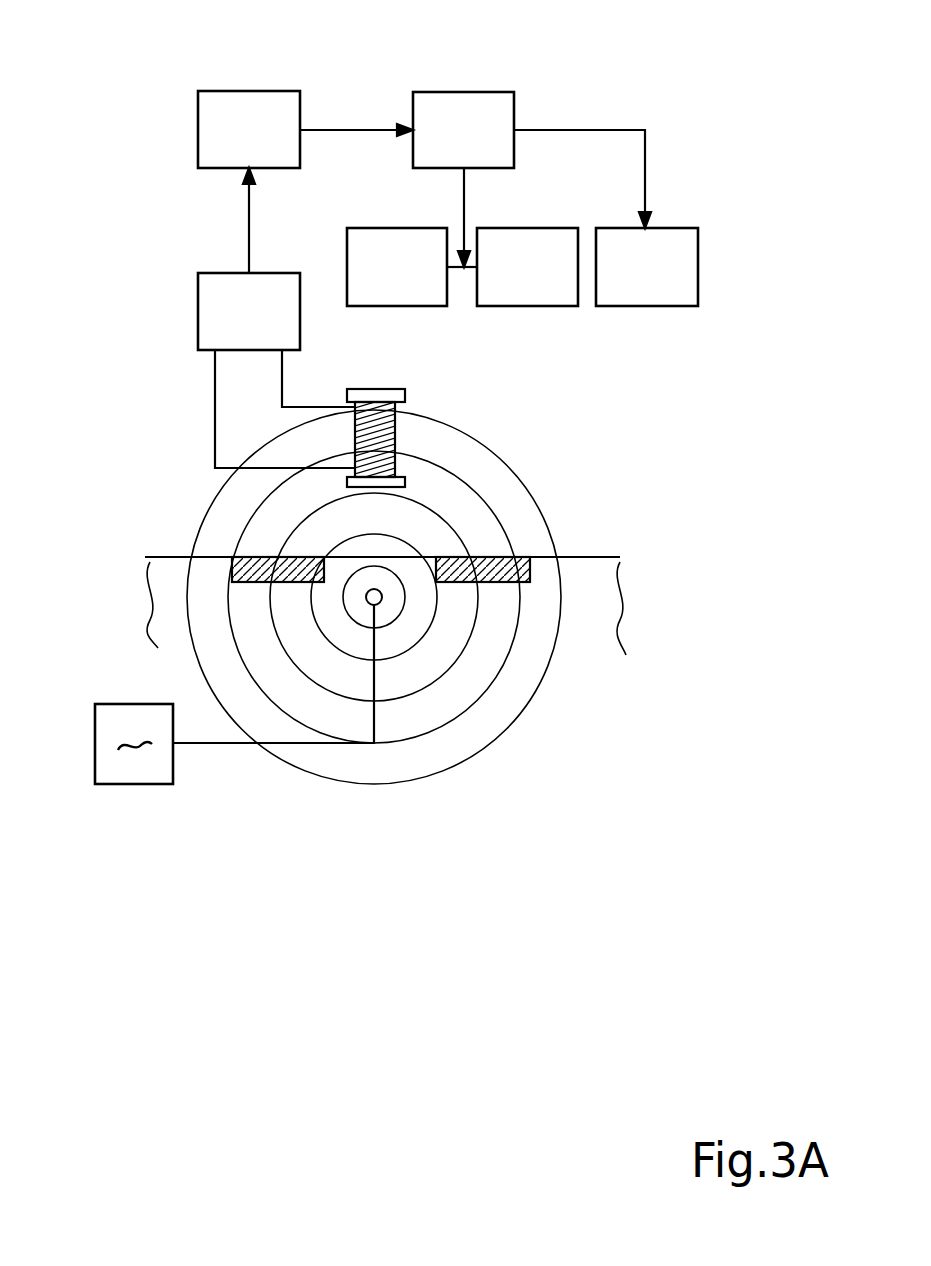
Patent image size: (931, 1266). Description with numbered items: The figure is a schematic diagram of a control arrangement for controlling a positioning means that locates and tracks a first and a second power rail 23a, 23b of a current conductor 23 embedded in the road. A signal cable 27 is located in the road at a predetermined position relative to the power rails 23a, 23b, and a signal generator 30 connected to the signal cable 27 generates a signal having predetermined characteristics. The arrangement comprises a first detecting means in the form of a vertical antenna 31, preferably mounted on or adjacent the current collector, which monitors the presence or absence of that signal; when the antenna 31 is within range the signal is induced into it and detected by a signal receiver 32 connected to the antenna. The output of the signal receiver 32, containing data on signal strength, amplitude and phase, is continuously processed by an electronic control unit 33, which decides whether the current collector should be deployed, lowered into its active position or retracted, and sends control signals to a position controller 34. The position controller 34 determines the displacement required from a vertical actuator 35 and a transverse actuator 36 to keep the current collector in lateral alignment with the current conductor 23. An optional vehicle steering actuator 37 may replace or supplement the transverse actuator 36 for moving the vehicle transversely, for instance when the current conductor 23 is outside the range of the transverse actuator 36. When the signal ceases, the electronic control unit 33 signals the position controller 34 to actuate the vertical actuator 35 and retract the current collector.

The current conductor 23 is at (128, 653).
The first power rail 23a is at (273, 558).
The second power rail 23b is at (493, 558).
The signal cable 27 is at (381, 603).
The signal generator 30 is at (135, 784).
The vertical antenna 31 is at (397, 443).
The signal receiver 32 is at (198, 322).
The electronic control unit 33 is at (198, 125).
The position controller 34 is at (468, 92).
The vertical actuator 35 is at (547, 306).
The transverse actuator 36 is at (418, 306).
The vehicle steering actuator 37 is at (683, 228).